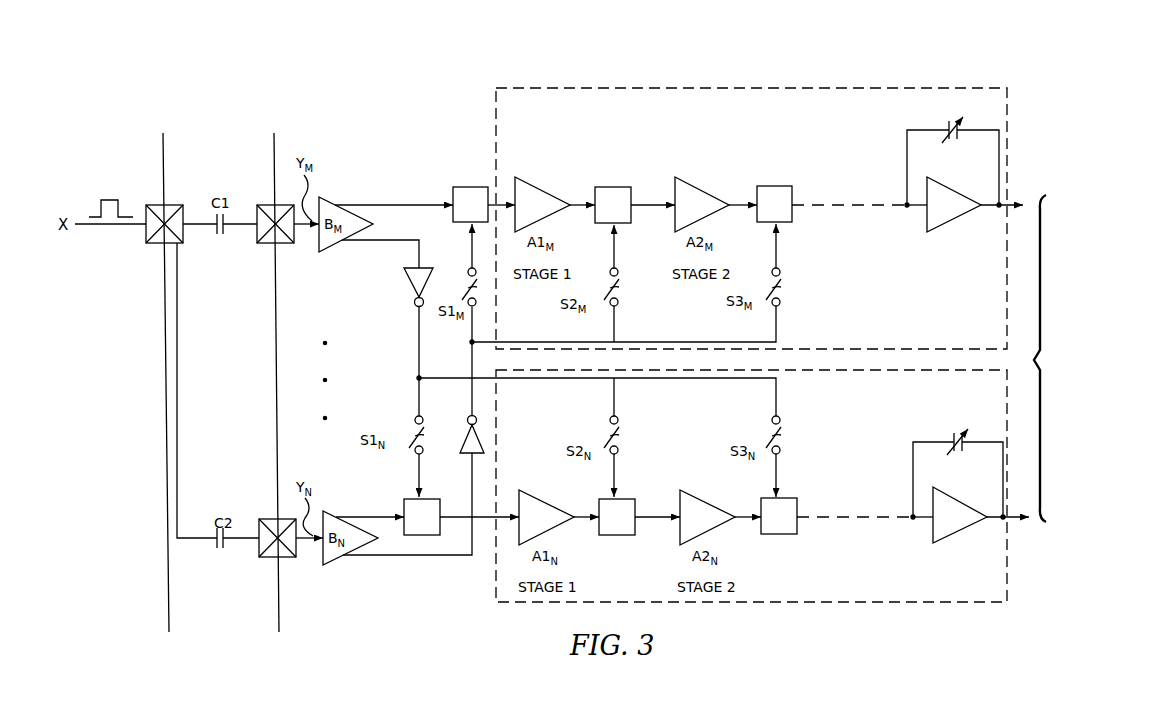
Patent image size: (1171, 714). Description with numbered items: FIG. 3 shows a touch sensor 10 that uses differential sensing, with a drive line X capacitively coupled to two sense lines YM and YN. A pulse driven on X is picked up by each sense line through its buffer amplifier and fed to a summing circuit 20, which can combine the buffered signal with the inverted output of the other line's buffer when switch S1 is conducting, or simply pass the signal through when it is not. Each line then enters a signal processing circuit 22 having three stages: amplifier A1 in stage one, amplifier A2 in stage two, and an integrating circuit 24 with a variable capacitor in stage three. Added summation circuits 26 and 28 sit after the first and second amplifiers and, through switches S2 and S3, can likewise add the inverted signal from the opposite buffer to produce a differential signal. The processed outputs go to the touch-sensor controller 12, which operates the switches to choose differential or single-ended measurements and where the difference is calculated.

The touch sensor 10 is at (228, 406).
The touch-sensor controller 12 is at (1095, 358).
The summing circuit 20 is at (467, 187).
The signal processing circuit 22 is at (584, 88).
The integrating circuit 24 is at (954, 190).
The summation circuit 26 is at (609, 187).
The summation circuit 28 is at (776, 186).